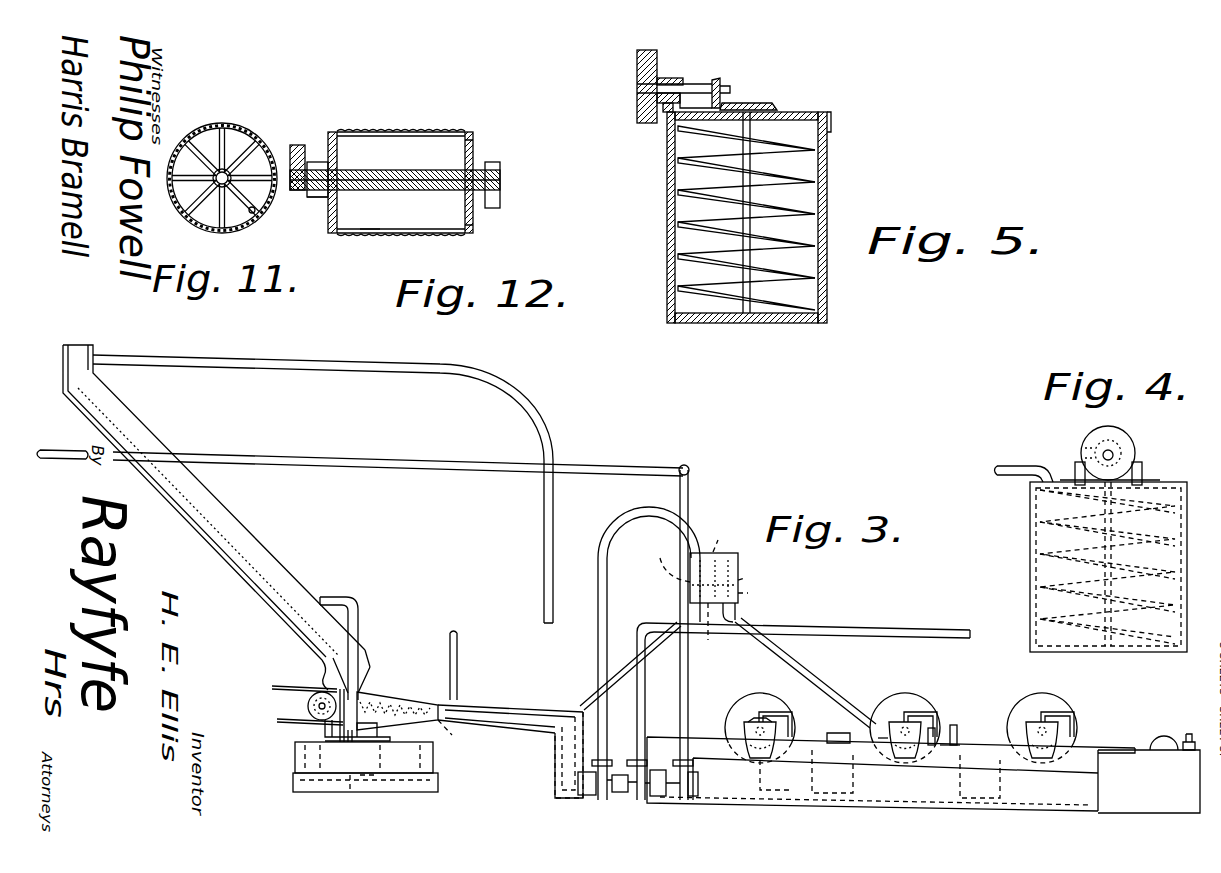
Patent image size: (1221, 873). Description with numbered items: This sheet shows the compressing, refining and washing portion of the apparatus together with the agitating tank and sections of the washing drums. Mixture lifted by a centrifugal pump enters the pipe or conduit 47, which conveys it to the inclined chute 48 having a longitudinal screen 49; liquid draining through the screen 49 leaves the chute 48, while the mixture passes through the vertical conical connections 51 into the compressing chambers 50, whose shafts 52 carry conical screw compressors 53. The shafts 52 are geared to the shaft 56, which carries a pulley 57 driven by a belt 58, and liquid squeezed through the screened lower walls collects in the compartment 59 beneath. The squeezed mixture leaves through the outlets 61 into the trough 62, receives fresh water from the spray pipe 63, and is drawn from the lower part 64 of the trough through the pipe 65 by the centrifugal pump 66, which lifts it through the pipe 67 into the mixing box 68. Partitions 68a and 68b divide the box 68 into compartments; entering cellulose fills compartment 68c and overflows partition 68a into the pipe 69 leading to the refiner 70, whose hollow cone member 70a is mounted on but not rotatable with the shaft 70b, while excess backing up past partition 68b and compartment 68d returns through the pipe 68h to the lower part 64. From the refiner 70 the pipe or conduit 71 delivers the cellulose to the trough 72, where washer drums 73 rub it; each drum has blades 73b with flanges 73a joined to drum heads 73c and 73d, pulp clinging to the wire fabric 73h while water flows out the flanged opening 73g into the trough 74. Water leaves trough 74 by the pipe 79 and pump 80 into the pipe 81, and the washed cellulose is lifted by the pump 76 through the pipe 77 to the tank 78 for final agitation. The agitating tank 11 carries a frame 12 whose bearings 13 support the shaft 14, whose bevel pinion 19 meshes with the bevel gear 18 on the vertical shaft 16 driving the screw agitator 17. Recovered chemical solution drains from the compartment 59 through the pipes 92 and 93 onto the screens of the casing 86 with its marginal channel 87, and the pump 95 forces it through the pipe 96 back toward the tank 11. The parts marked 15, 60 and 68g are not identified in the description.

In FIG. 4, the vat or tank 11 is at (1002, 476).
In FIG. 5, the frame 12 is at (811, 118).
In FIG. 4, the frame 12 is at (1142, 464).
In FIG. 5, the bearings 13 is at (670, 128).
In FIG. 5, the shaft 14 is at (692, 84).
In FIG. 5, the collar 15 is at (719, 82).
In FIG. 4, the collar 15 is at (1121, 438).
In FIG. 5, the vertical shaft 16 is at (752, 133).
In FIG. 4, the vertical shaft 16 is at (1128, 553).
In FIG. 5, the spiral or screw agitator 17 is at (781, 214).
In FIG. 4, the spiral or screw agitator 17 is at (1180, 577).
In FIG. 5, the bevel gear 18 is at (773, 108).
In FIG. 4, the bevel gear 18 is at (1148, 476).
In FIG. 5, the bevel pinion 19 is at (722, 89).
In FIG. 4, the bevel pinion 19 is at (1090, 446).
In FIG. 3, the pipe or conduit 47 is at (525, 405).
In FIG. 3, the chute 48 is at (262, 552).
In FIG. 3, the screen 49 is at (205, 503).
In FIG. 3, the compressing chambers 50 is at (390, 696).
In FIG. 3, the vertical conical connections 51 is at (376, 684).
In FIG. 3, the shafts 52 is at (410, 700).
In FIG. 3, the conical spiral or screw compressors 53 is at (432, 733).
In FIG. 3, the shaft 56 is at (320, 725).
In FIG. 3, the pulley 57 is at (308, 707).
In FIG. 3, the belt 58 is at (298, 724).
In FIG. 3, the compartment 59 is at (442, 746).
In FIG. 3, the chute lip 60 is at (320, 668).
In FIG. 3, the outlets 61 is at (482, 704).
In FIG. 3, the trough 62 is at (531, 709).
In FIG. 3, the spray pipe 63 is at (460, 695).
In FIG. 3, the lower part of the trough 64 is at (560, 772).
In FIG. 3, the pipe 65 is at (597, 802).
In FIG. 3, the centrifugal pump 66 is at (616, 800).
In FIG. 3, the pipe 67 is at (607, 582).
In FIG. 3, the mixing box 68 is at (712, 592).
In FIG. 3, the partition 68a is at (748, 593).
In FIG. 3, the partition 68b is at (717, 541).
In FIG. 3, the compartment 68c is at (709, 640).
In FIG. 3, the compartment 68d is at (745, 578).
In FIG. 3, the control box part 68g is at (660, 560).
In FIG. 3, the pipe 68h is at (652, 650).
In FIG. 3, the pipe 69 is at (825, 690).
In FIG. 3, the refining device 70 is at (952, 727).
In FIG. 3, the hollow cone member 70a is at (954, 712).
In FIG. 3, the shaft 70b is at (903, 706).
In FIG. 3, the pipe or conduit 71 is at (1160, 745).
In FIG. 3, the trough 72 is at (1149, 780).
In FIG. 11, the washer drums 73 is at (250, 160).
In FIG. 12, the washer drums 73 is at (420, 126).
In FIG. 3, the washer drums 73 is at (765, 690).
In FIG. 11, the flanges 73a is at (248, 128).
In FIG. 12, the flanges 73a is at (455, 134).
In FIG. 3, the flanges 73a is at (893, 728).
In FIG. 11, the blades 73b is at (232, 124).
In FIG. 12, the blades 73b is at (476, 165).
In FIG. 12, the drum head 73c is at (323, 138).
In FIG. 3, the drum head 73c is at (748, 714).
In FIG. 11, the drum head 73d is at (203, 218).
In FIG. 12, the drum head 73d is at (478, 140).
In FIG. 12, the flanged outlet opening 73g is at (324, 198).
In FIG. 3, the flanged outlet opening 73g is at (744, 723).
In FIG. 11, the screening or wire fabric 73h is at (253, 213).
In FIG. 12, the screening or wire fabric 73h is at (373, 237).
In FIG. 3, the trough 74 is at (760, 795).
In FIG. 3, the centrifugal pump 76 is at (655, 800).
In FIG. 3, the pipe or conduit 77 is at (878, 623).
In FIG. 4, the tank or receptacle 78 is at (1030, 580).
In FIG. 3, the pipe 79 is at (694, 805).
In FIG. 3, the centrifugal pump 80 is at (683, 802).
In FIG. 3, the pipe or conduit 81 is at (290, 456).
In FIG. 3, the receptacle or trough or casing 86 is at (436, 770).
In FIG. 3, the marginal channel 87 is at (420, 792).
In FIG. 3, the pipe 92 is at (342, 752).
In FIG. 3, the pipe 93 is at (392, 752).
In FIG. 3, the centrifugal pump 95 is at (365, 795).
In FIG. 3, the pipe or conduit 96 is at (360, 628).